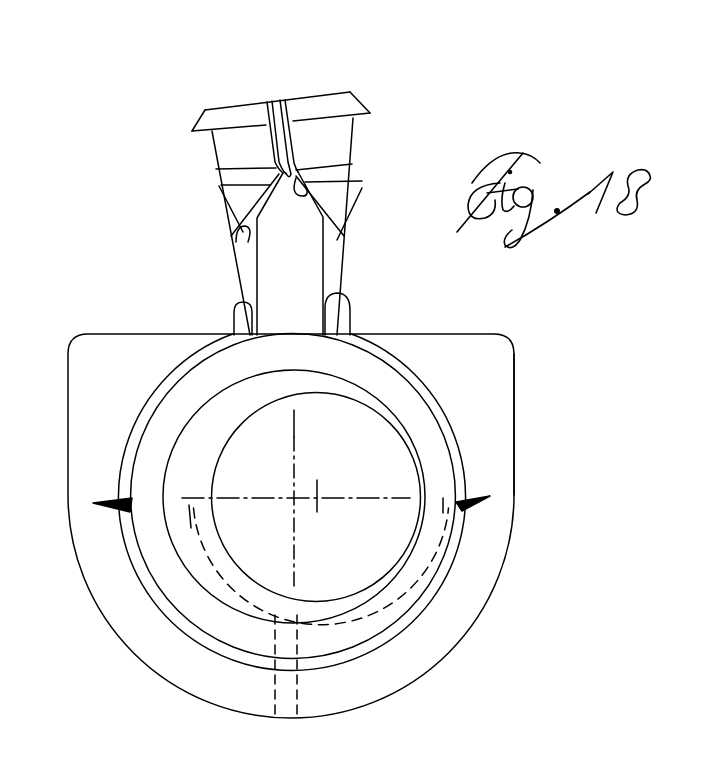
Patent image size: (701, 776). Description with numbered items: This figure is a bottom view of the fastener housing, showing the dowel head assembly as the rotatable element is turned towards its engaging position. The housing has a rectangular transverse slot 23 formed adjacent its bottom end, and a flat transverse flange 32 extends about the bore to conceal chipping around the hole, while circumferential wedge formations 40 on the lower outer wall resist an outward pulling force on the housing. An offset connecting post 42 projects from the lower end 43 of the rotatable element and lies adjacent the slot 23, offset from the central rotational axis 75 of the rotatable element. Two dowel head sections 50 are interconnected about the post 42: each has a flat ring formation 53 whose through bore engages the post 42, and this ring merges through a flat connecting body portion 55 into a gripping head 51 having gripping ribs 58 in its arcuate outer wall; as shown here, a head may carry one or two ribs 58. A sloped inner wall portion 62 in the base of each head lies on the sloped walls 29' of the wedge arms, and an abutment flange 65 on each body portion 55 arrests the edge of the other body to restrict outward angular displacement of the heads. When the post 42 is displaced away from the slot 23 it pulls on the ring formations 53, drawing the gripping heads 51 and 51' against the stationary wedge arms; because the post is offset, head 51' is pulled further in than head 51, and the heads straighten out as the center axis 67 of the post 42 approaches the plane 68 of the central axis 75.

The rectangular transverse slot 23 is at (455, 333).
The flat transverse flange 32 is at (498, 378).
The circumferential wedge formations 40 is at (390, 637).
The offset connecting post 42 is at (390, 497).
The lower end 43 is at (85, 615).
The central rotational axis 75 is at (270, 533).
The flat ring formation 53 is at (425, 578).
The plane of the central axis 68 is at (296, 432).
The center axis of the offset connecting post 67 is at (318, 500).
The dowel head section 50 is at (178, 165).
The flat connecting body portion 55 is at (343, 240).
The gripping ribs 58 is at (213, 118).
The gripping head 51 is at (334, 96).
The gripping head 51' is at (215, 106).
The sloped walls 29' is at (298, 197).
The sloped inner wall portion 62 is at (238, 247).
The abutment flange 65 is at (193, 302).